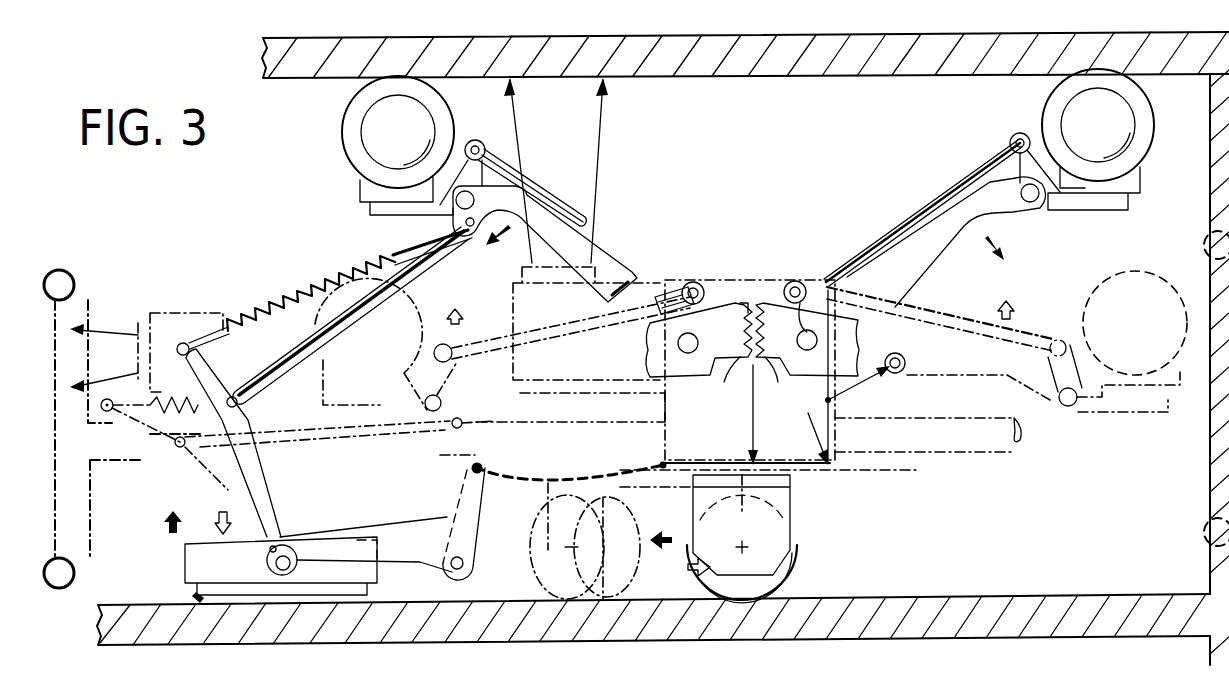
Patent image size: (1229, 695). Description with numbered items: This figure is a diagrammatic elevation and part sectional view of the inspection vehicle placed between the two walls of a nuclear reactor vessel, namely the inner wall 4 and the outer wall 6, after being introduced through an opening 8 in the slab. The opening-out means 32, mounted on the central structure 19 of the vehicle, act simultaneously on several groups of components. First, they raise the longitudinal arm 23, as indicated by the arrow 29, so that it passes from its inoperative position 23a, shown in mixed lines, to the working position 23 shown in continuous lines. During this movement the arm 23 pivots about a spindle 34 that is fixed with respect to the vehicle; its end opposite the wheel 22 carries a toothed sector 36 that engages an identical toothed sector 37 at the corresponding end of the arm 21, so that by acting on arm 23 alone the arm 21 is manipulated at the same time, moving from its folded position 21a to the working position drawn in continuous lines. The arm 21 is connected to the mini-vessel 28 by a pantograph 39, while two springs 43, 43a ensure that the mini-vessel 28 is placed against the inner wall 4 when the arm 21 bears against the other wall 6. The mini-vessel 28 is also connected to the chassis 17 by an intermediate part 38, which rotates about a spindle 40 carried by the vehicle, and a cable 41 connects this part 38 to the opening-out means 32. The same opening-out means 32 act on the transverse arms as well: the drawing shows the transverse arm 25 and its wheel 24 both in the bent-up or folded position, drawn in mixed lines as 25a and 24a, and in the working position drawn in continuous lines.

The inner wall 4 is at (1060, 601).
The outer wall 6 is at (798, 75).
The opening 8 is at (1210, 230).
The chassis 17 is at (962, 452).
The central structure 19 is at (718, 282).
The arm 21 is at (609, 262).
The inoperative position of arm 21 21a is at (545, 340).
The wheel 22 is at (1106, 289).
The longitudinal arm 23 is at (952, 240).
The inoperative position of longitudinal arm 23a is at (1010, 378).
The wheel 24 is at (778, 568).
The folded position of wheel 24 24a is at (612, 597).
The transverse arm 25 is at (790, 478).
The folded position of transverse arm 25a is at (622, 458).
The mini-vessel 28 is at (185, 566).
The arrow 29 is at (878, 376).
The opening-out means 32 is at (836, 466).
The spindle 34 is at (800, 289).
The toothed sector 36 is at (756, 458).
The toothed sector 37 is at (713, 360).
The intermediate part 38 is at (407, 540).
The pantograph 39 is at (258, 482).
The spindle 40 is at (452, 569).
The cable 41 is at (530, 482).
The spring 43 is at (265, 305).
The spring 43a is at (266, 308).